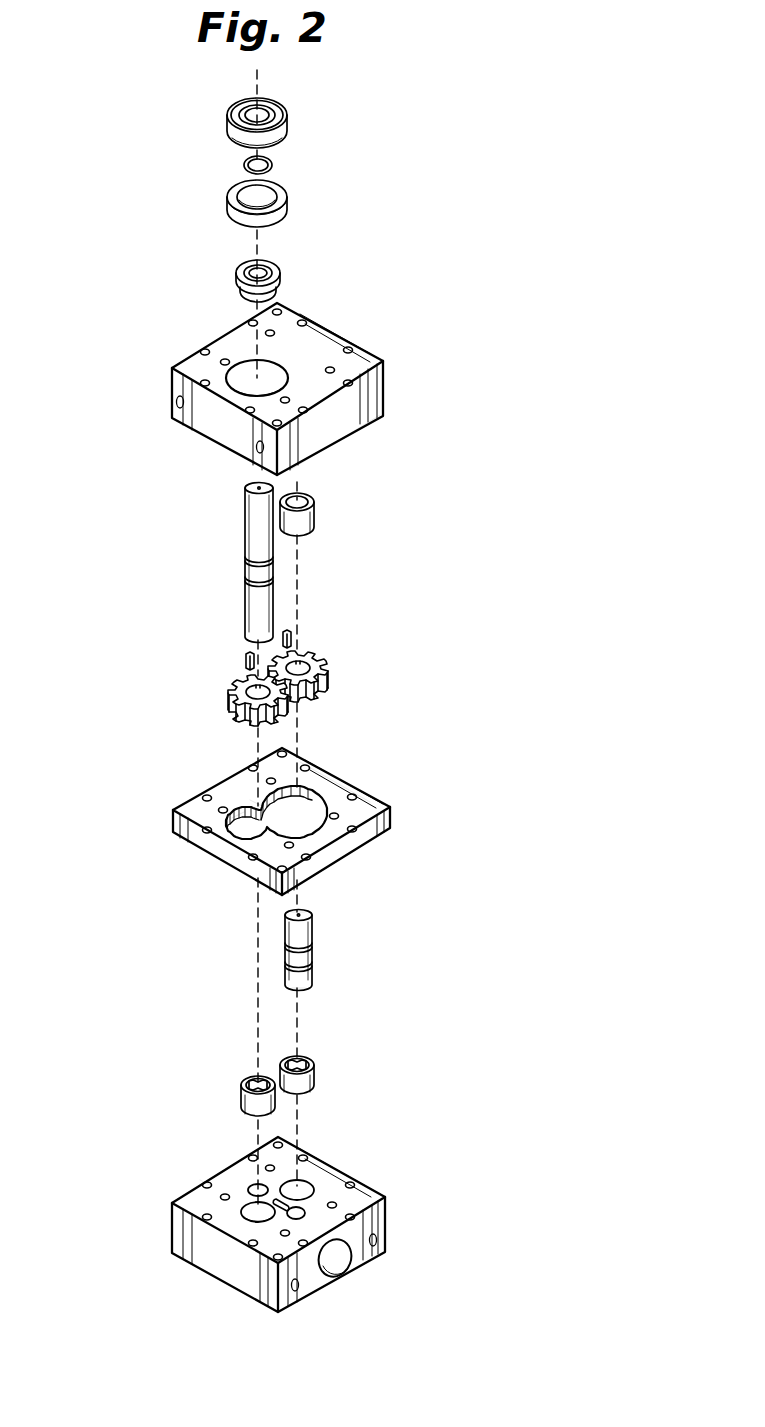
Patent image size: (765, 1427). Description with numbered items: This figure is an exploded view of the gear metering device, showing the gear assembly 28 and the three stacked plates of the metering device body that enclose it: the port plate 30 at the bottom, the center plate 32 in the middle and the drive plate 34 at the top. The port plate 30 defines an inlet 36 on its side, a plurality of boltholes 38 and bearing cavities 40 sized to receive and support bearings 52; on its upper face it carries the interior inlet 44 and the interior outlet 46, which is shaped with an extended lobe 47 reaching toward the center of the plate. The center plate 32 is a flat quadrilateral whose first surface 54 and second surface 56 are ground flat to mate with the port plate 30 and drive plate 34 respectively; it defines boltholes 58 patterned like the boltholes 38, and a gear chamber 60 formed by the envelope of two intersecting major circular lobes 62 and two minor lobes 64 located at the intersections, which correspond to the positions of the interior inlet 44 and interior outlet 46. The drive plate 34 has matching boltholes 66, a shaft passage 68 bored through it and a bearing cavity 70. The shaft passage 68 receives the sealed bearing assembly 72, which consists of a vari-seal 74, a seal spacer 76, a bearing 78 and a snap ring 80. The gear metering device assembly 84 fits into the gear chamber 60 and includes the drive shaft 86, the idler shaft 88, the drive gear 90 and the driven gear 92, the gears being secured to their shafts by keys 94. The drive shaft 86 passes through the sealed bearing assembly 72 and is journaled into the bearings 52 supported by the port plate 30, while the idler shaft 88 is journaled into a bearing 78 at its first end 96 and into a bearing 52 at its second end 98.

The gear assembly 28 is at (325, 668).
The port plate 30 is at (340, 1205).
The center plate 32 is at (390, 820).
The drive plate 34 is at (385, 385).
The inlet 36 is at (345, 1272).
The boltholes 38 is at (205, 1183).
The bearing cavities 40 is at (250, 1208).
The interior inlet 44 is at (308, 1208).
The interior outlet 46 is at (255, 1184).
The extended lobe 47 is at (280, 1203).
The bearings 52 is at (315, 1080).
The first surface 54 is at (365, 843).
The second surface 56 is at (372, 800).
The boltholes 58 is at (192, 795).
The gear chamber 60 is at (306, 793).
The major circular lobes 62 is at (235, 812).
The minor lobes 64 is at (252, 800).
The boltholes 66 is at (226, 358).
The shaft passage 68 is at (283, 368).
The bearing cavity 70 is at (340, 447).
The sealed bearing assembly 72 is at (303, 95).
The vari-seal 74 is at (240, 277).
The seal spacer 76 is at (228, 207).
The bearing 78 is at (228, 125).
The snap ring 80 is at (245, 164).
The gear metering device assembly 84 is at (447, 482).
The drive shaft 86 is at (245, 512).
The idler shaft 88 is at (312, 966).
The drive gear 90 is at (230, 690).
The driven gear 92 is at (330, 685).
The keys 94 is at (245, 660).
The first end 96 is at (312, 914).
The second end 98 is at (308, 985).